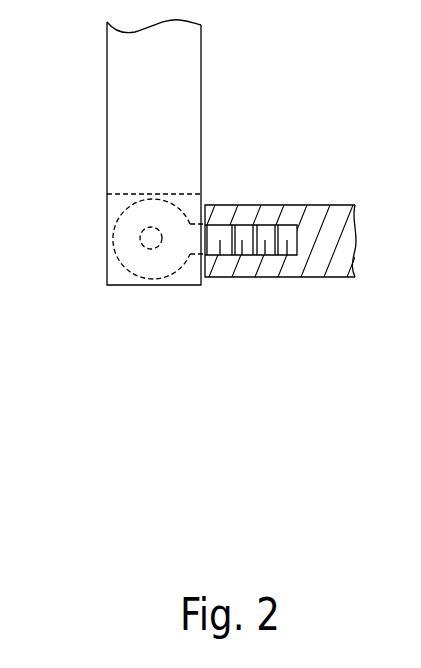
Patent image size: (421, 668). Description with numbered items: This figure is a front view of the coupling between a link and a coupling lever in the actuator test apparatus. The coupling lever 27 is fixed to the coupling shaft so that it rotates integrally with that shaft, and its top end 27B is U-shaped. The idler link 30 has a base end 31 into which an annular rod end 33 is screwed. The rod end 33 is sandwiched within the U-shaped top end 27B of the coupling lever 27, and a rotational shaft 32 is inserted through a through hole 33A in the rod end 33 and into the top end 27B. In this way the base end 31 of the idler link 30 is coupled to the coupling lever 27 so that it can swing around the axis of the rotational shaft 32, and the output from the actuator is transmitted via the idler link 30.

The coupling lever 27 is at (108, 124).
The top end of the coupling lever 27B is at (108, 236).
The idler link 30 is at (337, 278).
The base end of the idler link 31 is at (233, 278).
The rotational shaft 32 is at (152, 227).
The rod end 33 is at (152, 279).
The through hole 33A is at (142, 247).